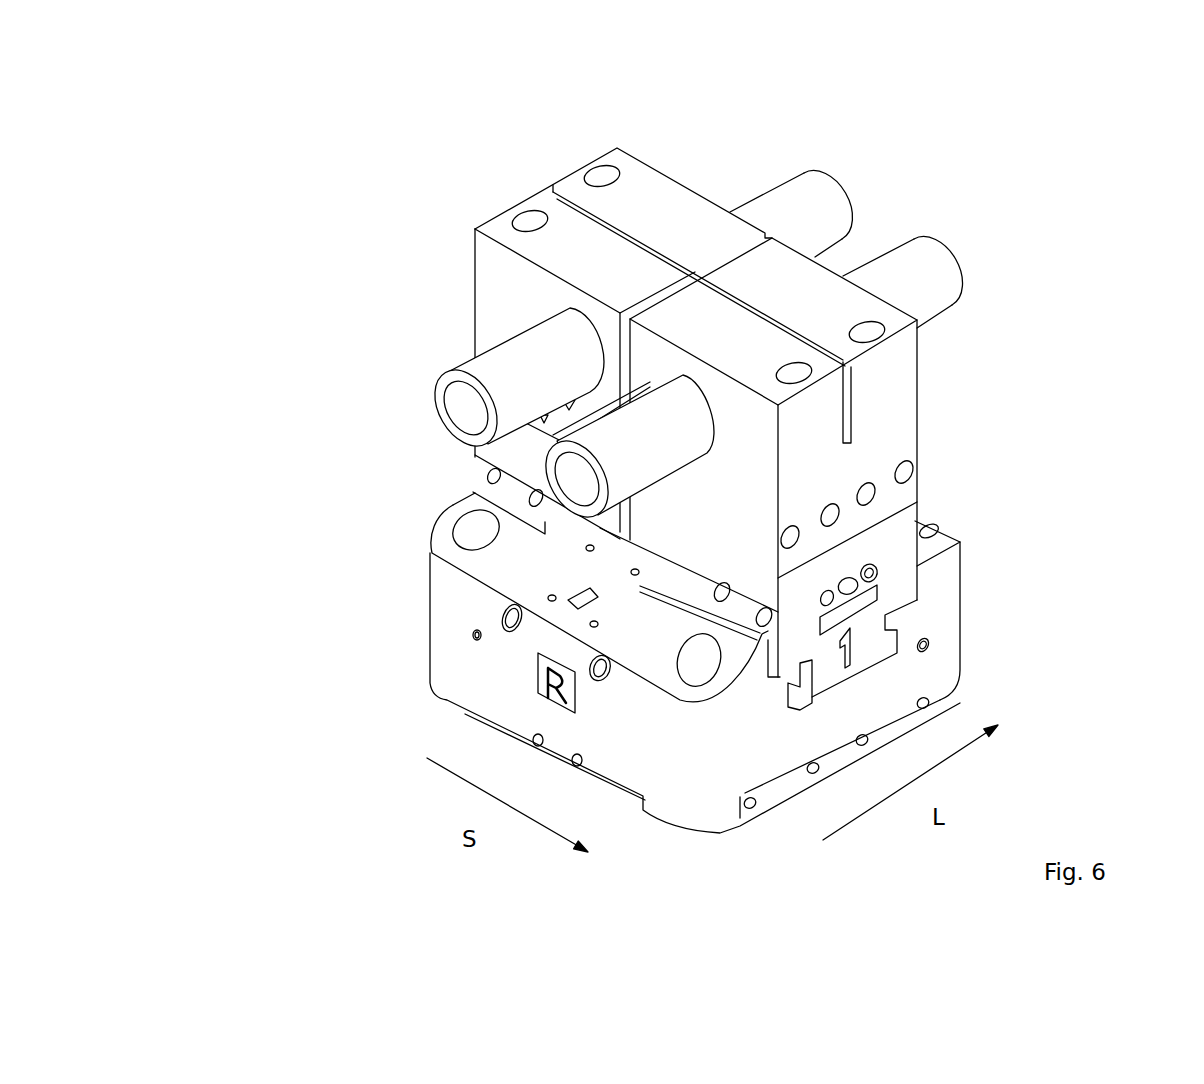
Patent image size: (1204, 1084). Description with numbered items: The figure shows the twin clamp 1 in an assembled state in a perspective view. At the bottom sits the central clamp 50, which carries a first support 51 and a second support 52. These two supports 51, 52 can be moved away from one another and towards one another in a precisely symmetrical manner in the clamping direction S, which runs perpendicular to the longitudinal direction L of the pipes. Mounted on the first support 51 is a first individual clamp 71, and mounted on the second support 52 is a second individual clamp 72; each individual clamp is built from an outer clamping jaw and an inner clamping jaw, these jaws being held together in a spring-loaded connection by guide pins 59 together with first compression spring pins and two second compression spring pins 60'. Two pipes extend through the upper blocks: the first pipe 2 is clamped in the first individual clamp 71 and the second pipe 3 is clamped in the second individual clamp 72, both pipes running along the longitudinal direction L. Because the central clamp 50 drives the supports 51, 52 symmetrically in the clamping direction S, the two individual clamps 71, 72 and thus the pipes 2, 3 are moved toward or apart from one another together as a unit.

The twin clamp 1 is at (1056, 444).
The first pipe 2 is at (457, 397).
The second pipe 3 is at (930, 285).
The central clamp 50 is at (465, 665).
The first support 51 is at (507, 472).
The second support 52 is at (837, 568).
The guide pin 59 is at (790, 538).
The second compression spring pin 60' is at (982, 520).
The first individual clamp 71 is at (709, 162).
The second individual clamp 72 is at (855, 246).